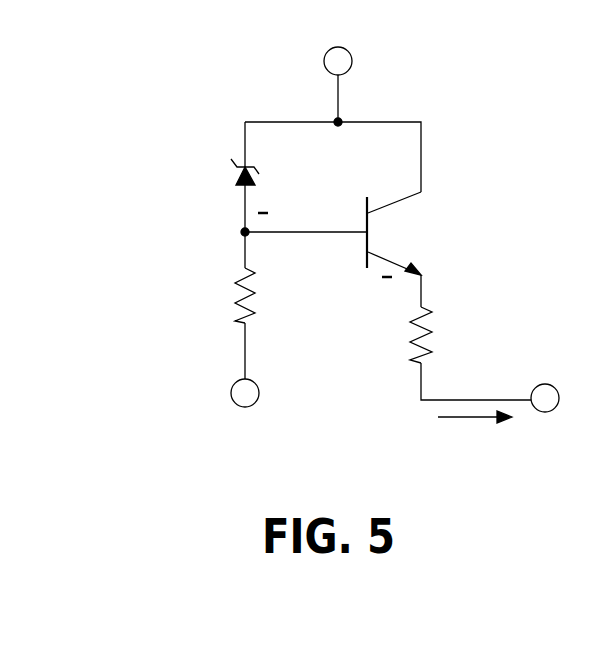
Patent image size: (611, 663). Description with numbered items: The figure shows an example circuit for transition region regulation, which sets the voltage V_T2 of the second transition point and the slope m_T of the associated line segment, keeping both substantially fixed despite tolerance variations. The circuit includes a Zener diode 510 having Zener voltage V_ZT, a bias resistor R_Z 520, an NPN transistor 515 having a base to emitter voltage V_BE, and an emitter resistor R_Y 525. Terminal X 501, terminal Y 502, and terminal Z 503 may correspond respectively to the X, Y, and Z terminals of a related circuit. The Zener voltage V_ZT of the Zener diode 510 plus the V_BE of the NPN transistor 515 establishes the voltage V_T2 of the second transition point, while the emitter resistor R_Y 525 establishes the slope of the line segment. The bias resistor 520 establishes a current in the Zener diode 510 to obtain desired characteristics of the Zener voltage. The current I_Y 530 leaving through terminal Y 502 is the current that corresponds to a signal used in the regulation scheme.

The terminal X 501 is at (317, 63).
The terminal Y 502 is at (542, 380).
The terminal Z 503 is at (225, 389).
The Zener diode 510 is at (231, 183).
The NPN transistor 515 is at (381, 196).
The bias resistor 520 is at (231, 298).
The emitter resistor 525 is at (440, 327).
The current I_Y 530 is at (457, 427).